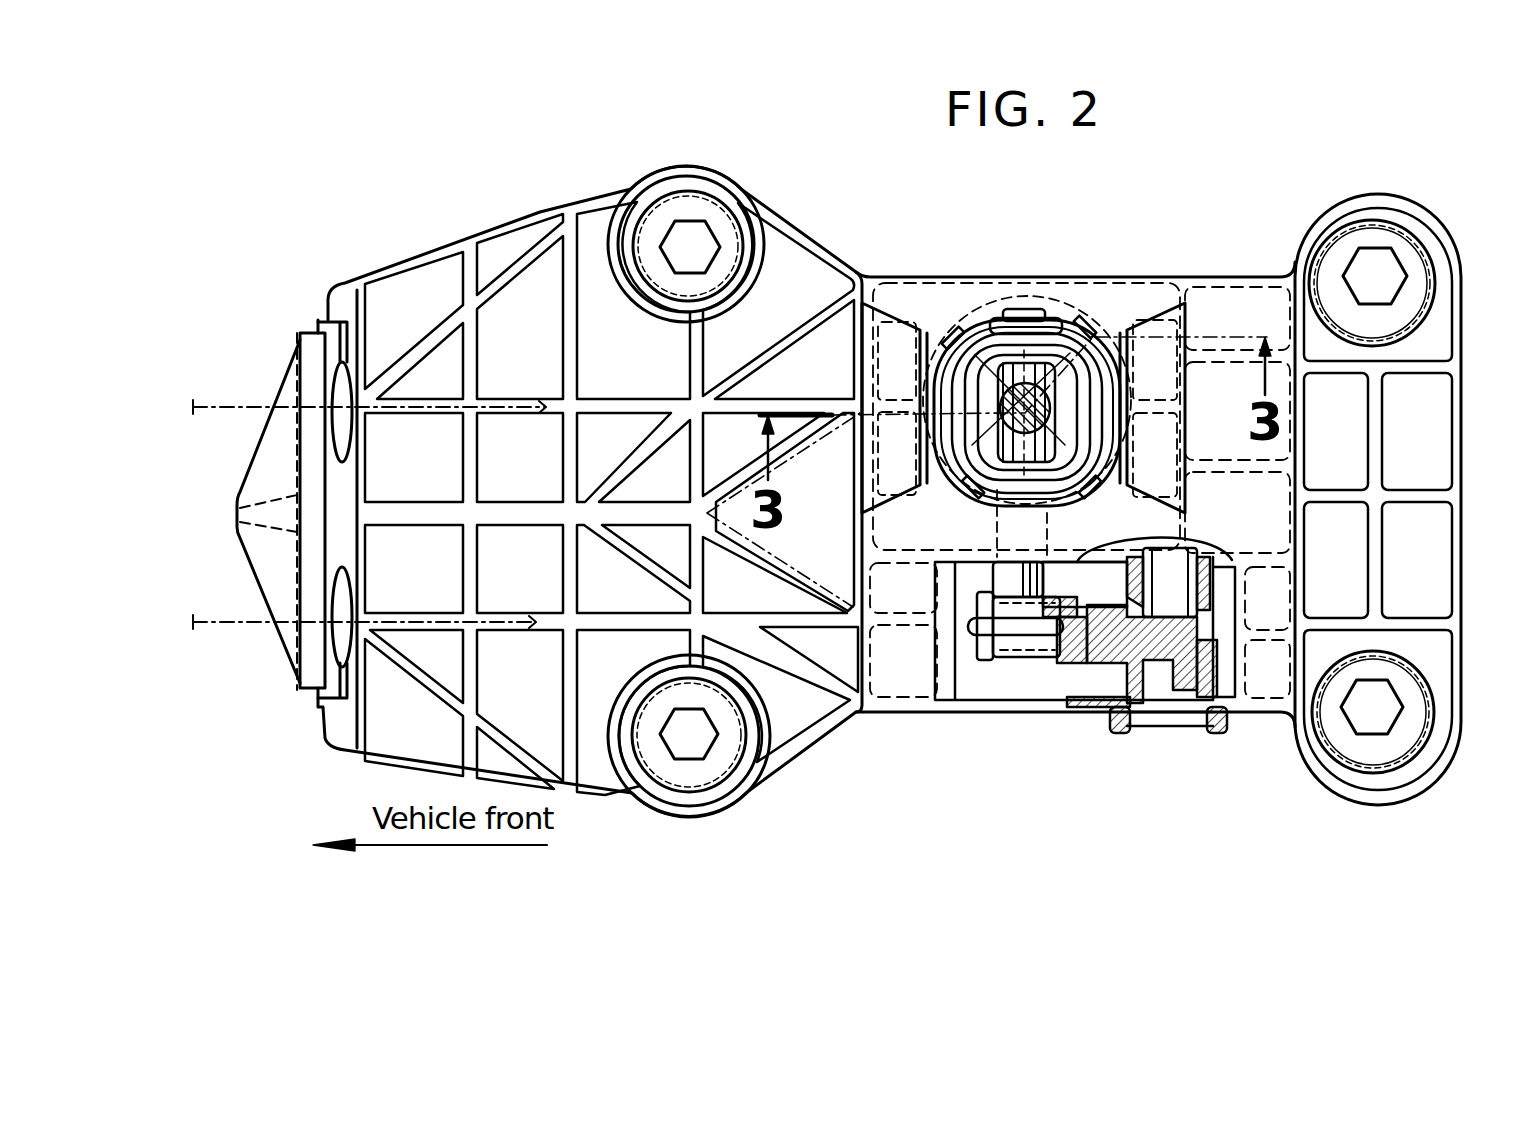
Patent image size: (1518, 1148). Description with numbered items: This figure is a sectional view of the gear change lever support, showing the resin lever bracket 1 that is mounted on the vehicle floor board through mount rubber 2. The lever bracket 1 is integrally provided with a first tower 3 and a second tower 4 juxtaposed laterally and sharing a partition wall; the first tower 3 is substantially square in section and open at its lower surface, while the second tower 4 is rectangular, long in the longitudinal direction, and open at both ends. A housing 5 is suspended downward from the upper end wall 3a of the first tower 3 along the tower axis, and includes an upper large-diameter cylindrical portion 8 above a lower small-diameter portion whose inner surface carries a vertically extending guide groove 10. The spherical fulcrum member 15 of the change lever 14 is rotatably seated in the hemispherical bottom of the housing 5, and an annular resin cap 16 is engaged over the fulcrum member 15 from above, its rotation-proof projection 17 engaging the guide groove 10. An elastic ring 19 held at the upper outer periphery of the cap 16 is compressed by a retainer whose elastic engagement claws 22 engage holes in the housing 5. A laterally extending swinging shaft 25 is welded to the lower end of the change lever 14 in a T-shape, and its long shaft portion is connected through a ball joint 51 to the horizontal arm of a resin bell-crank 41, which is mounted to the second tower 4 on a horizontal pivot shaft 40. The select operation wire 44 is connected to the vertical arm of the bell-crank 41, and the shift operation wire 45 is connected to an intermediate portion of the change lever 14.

The lever bracket 1 is at (436, 242).
The mount rubber 2 is at (732, 212).
The first tower 3 is at (1116, 275).
The upper end wall 3a is at (1150, 300).
The second tower 4 is at (982, 708).
The housing 5 is at (977, 503).
The upper large-diameter cylindrical portion 8 is at (1107, 382).
The guide groove 10 is at (1040, 313).
The change lever 14 is at (976, 336).
The spherical fulcrum member 15 is at (915, 449).
The annular cap 16 is at (987, 320).
The rotation-proof projection 17 is at (1013, 310).
The elastic ring 19 is at (915, 374).
The elastic engagement claws 22 is at (930, 312).
The swinging shaft 25 is at (1042, 532).
The horizontal pivot shaft 40 is at (1197, 545).
The bell-crank 41 is at (973, 655).
The push-pull select operation wire 44 is at (220, 623).
The push-pull shift operation wire 45 is at (220, 407).
The ball joint 51 is at (1033, 660).